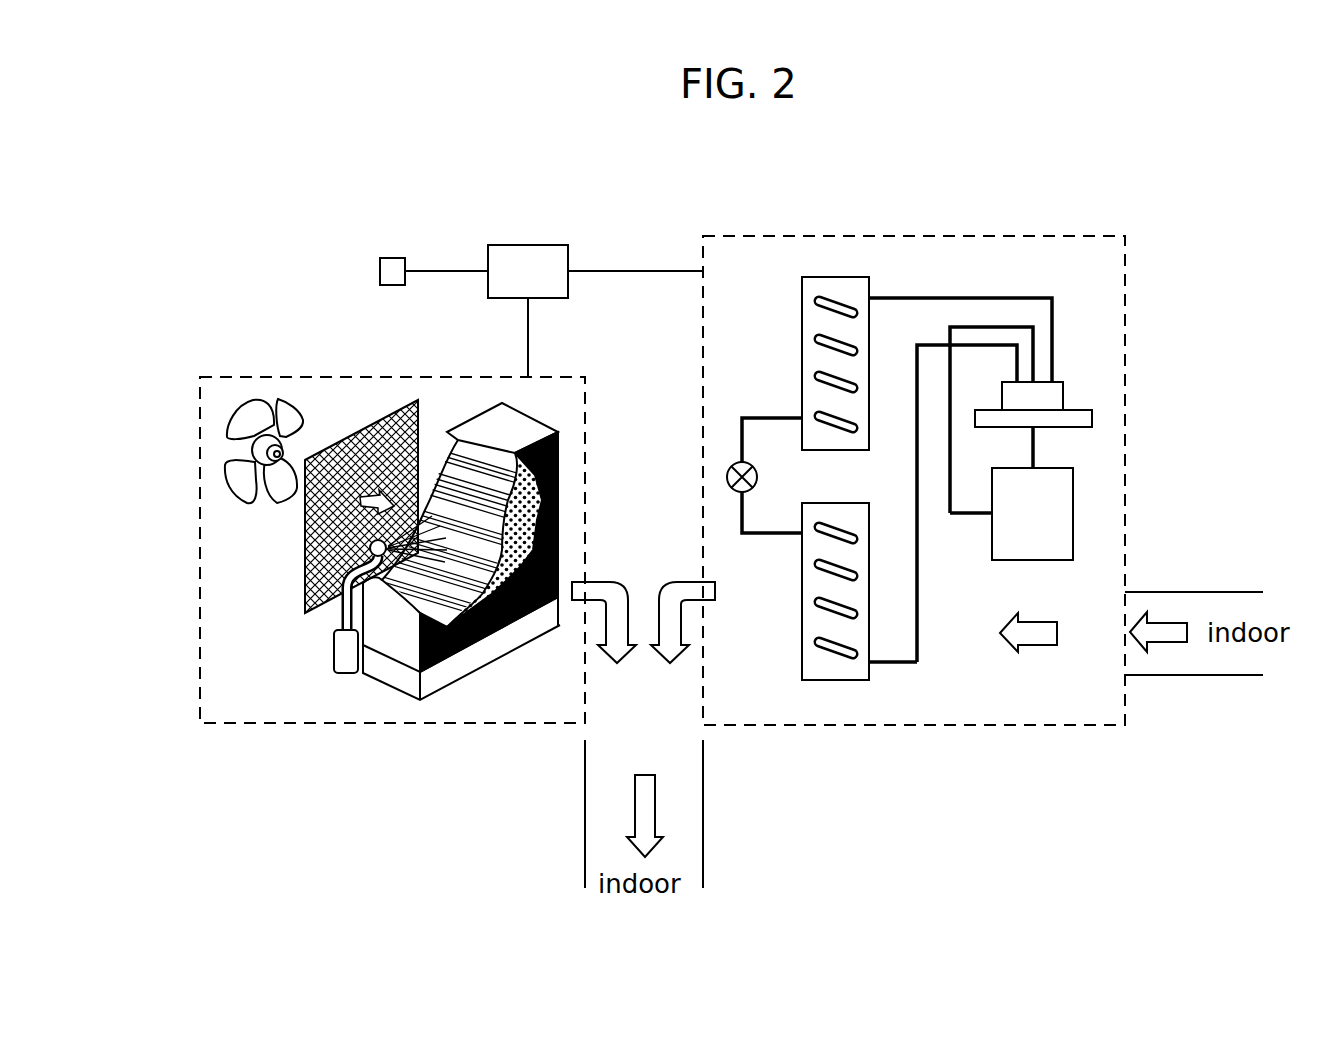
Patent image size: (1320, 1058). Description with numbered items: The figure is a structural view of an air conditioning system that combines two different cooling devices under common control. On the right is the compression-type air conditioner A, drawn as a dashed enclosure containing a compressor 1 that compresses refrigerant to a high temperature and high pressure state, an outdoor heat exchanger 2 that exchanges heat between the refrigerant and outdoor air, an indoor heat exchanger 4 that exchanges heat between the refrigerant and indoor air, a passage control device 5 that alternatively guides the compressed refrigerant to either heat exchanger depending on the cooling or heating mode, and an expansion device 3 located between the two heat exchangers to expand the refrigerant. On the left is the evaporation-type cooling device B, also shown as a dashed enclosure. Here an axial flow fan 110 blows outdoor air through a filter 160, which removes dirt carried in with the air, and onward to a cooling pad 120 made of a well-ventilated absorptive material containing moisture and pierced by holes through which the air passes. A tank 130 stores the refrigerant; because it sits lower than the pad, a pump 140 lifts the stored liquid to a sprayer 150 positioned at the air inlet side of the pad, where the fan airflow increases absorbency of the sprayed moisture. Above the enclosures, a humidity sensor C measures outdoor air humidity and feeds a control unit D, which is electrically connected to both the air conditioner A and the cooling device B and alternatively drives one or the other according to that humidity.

The compressor 1 is at (1068, 517).
The outdoor heat exchanger 2 is at (837, 284).
The expansion device 3 is at (726, 477).
The indoor heat exchanger 4 is at (835, 668).
The passage control device 5 is at (1055, 392).
The compression-type air conditioner A is at (1000, 236).
The evaporation-type cooling device B is at (268, 376).
The humidity sensor C is at (392, 264).
The control unit D is at (527, 256).
The axial flow fan 110 is at (228, 447).
The cooling pad 120 is at (515, 545).
The tank 130 is at (498, 648).
The pump 140 is at (340, 653).
The sprayer 150 is at (305, 577).
The filter 160 is at (380, 410).